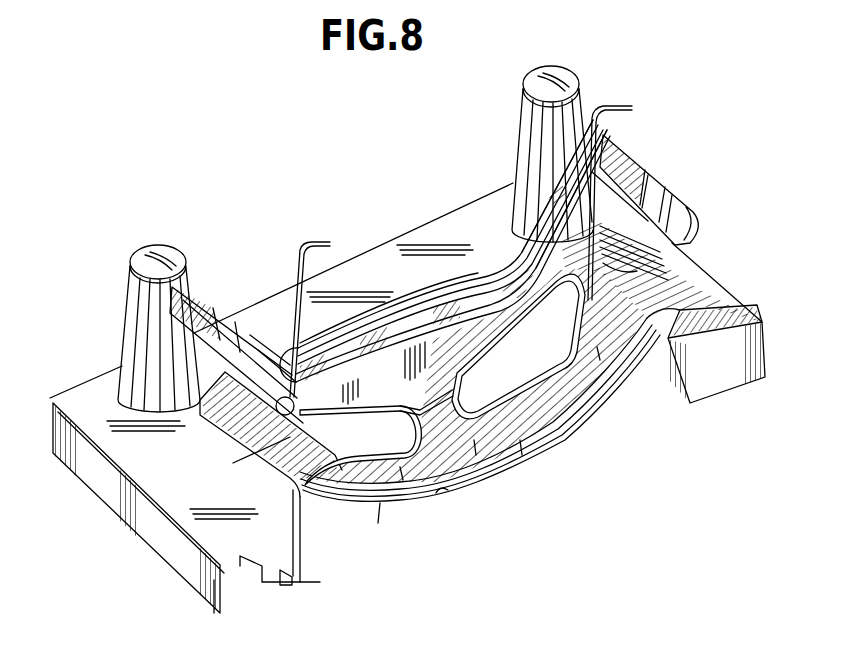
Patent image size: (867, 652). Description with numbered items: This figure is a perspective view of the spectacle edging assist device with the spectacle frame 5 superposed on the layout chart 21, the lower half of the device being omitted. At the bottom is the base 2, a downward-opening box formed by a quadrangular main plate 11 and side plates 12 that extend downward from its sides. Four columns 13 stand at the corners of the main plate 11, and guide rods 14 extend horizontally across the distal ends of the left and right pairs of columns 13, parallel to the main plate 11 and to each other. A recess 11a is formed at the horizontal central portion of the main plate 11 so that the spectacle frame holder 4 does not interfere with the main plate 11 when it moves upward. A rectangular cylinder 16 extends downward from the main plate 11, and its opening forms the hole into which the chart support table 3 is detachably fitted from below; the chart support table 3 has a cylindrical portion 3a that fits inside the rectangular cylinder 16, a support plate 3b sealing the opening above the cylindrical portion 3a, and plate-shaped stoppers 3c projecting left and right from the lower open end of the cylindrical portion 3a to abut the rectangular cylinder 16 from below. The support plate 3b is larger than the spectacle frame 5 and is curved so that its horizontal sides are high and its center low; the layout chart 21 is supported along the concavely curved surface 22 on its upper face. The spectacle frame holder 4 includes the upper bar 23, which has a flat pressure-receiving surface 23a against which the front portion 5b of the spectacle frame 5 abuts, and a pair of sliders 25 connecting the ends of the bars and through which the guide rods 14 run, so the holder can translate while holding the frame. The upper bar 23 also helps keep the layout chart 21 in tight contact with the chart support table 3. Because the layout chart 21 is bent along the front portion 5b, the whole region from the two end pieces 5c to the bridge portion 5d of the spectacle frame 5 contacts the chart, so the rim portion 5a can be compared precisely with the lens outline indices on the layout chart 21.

The base 2 is at (93, 490).
The chart support table 3 is at (233, 463).
The cylindrical portion 3a is at (305, 542).
The support plate 3b is at (400, 467).
The stoppers 3c is at (262, 567).
The spectacle frame holder 4 is at (504, 251).
The spectacle frame 5 is at (615, 362).
The rim portion 5a is at (403, 467).
The front portion 5b is at (520, 440).
The end pieces 5c is at (623, 267).
The bridge portion 5d is at (474, 440).
The main plate 11 is at (88, 400).
The recess 11a is at (367, 323).
The side plates 12 is at (185, 565).
The columns 13 is at (123, 333).
The guide rods 14 is at (197, 298).
The rectangular cylinder 16 is at (287, 583).
The layout chart 21 is at (545, 415).
The concavely curved surface 22 is at (443, 497).
The upper bar 23 is at (437, 295).
The pressure-receiving surface 23a is at (480, 312).
The sliders 25 is at (658, 215).